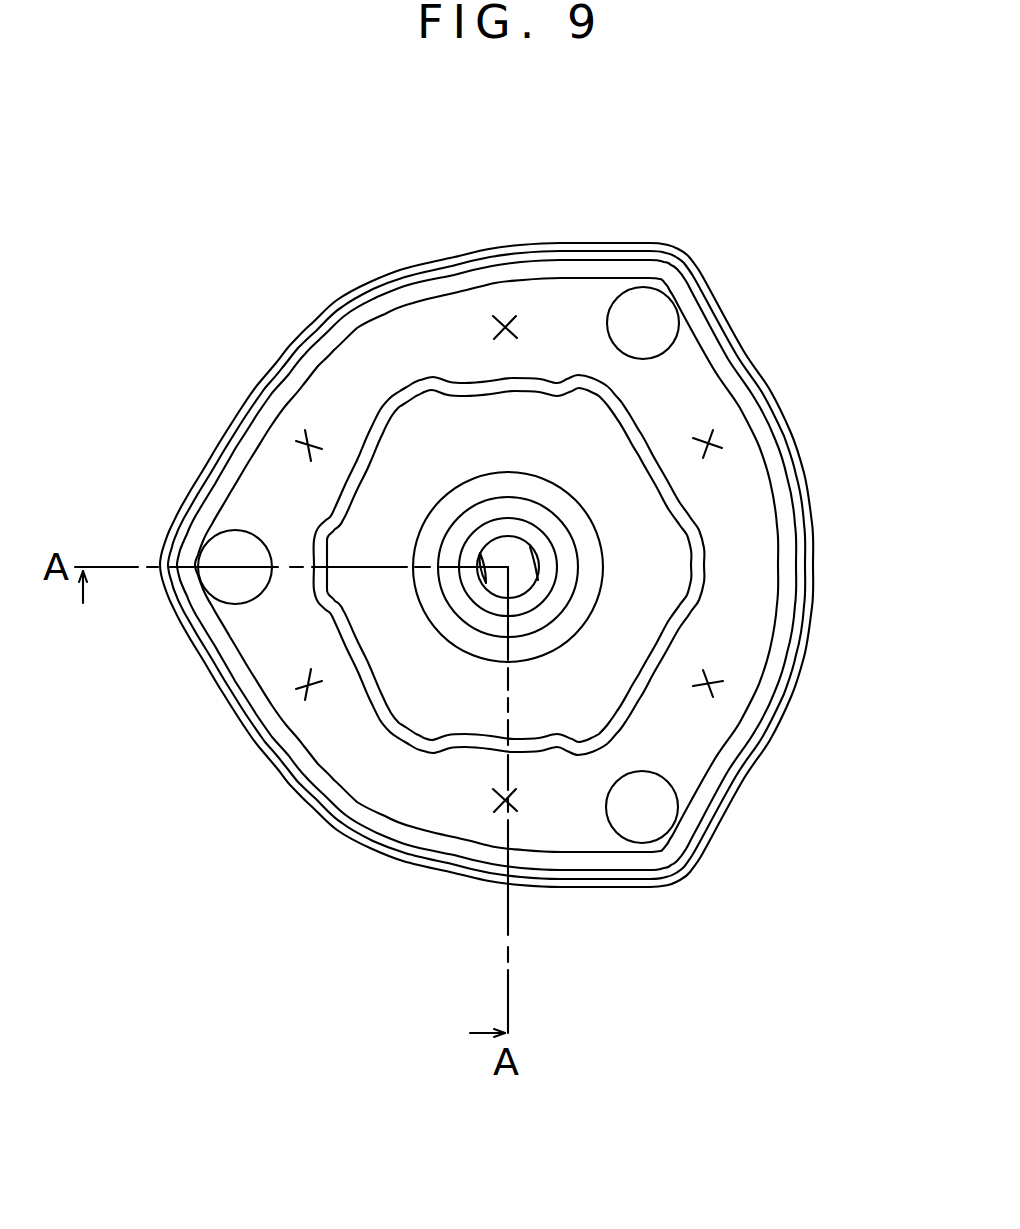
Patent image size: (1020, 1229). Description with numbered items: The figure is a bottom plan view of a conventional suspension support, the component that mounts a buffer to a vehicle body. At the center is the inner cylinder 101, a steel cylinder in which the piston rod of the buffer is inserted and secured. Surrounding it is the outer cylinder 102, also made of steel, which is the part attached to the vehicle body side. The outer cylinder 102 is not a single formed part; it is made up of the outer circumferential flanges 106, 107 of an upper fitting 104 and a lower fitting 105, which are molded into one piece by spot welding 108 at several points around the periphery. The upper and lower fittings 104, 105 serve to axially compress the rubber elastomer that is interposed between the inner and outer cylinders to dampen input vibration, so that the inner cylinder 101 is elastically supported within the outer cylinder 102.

The inner cylinder 101 is at (532, 535).
The outer cylinder 102 is at (727, 286).
The upper fitting 104 is at (412, 293).
The lower fitting 105 is at (392, 487).
The outer circumferential flange 106 is at (550, 275).
The outer circumferential flange 107 is at (570, 303).
The spot welding 108 is at (708, 683).